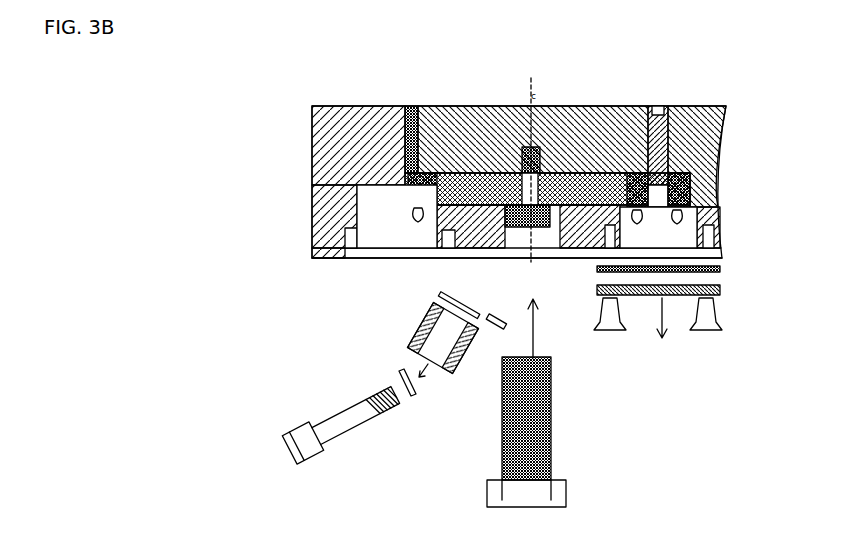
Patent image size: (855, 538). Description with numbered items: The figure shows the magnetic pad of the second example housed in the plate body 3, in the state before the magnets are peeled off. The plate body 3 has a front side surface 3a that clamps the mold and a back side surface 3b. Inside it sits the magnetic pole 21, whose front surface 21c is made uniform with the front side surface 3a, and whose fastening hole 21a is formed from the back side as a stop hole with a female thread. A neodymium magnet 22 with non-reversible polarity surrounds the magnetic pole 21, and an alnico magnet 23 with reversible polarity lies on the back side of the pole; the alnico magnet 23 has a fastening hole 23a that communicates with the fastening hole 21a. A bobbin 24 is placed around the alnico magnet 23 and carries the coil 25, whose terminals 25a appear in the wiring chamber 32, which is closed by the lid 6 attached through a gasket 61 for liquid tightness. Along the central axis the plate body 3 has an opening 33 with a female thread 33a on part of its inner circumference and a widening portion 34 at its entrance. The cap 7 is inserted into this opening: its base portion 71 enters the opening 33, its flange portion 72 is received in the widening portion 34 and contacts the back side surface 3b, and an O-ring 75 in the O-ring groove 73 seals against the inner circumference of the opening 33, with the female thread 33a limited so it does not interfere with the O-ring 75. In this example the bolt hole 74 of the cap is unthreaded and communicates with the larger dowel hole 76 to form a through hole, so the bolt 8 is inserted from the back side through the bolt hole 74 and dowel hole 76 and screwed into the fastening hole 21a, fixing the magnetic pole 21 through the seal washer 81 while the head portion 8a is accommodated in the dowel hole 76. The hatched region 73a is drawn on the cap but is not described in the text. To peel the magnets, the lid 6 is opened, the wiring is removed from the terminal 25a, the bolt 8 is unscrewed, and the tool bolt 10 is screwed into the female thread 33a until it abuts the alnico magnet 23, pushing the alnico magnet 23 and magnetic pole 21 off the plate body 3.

The plate body 3 is at (312, 195).
The front side surface 3a is at (353, 104).
The back side surface 3b is at (505, 258).
The magnetic pole 21 is at (445, 106).
The fastening hole 21a is at (512, 150).
The front surface 21c is at (427, 106).
The neodymium magnet 22 is at (656, 106).
The alnico magnet 23 is at (590, 140).
The fastening hole 23a is at (463, 125).
The bobbin 24 is at (668, 165).
The coil 25 is at (690, 187).
The terminal 25a is at (700, 210).
The wiring chamber 32 is at (519, 216).
The opening 33 is at (546, 258).
The female thread 33a is at (530, 258).
The widening portion 34 is at (535, 262).
The lid 6 is at (720, 295).
The gasket 61 is at (720, 272).
The cap 7 is at (420, 350).
The base portion 71 is at (450, 298).
The flange portion 72 is at (412, 335).
The O-ring groove 73 is at (416, 325).
The sleeve end 73a is at (473, 372).
The bolt hole 74 is at (428, 318).
The sealing member 75 is at (497, 325).
The dowel hole 76 is at (410, 345).
The bolt 8 is at (298, 426).
The head portion 8a is at (310, 466).
The sealing member 81 is at (406, 398).
The tool bolt 10 is at (552, 418).